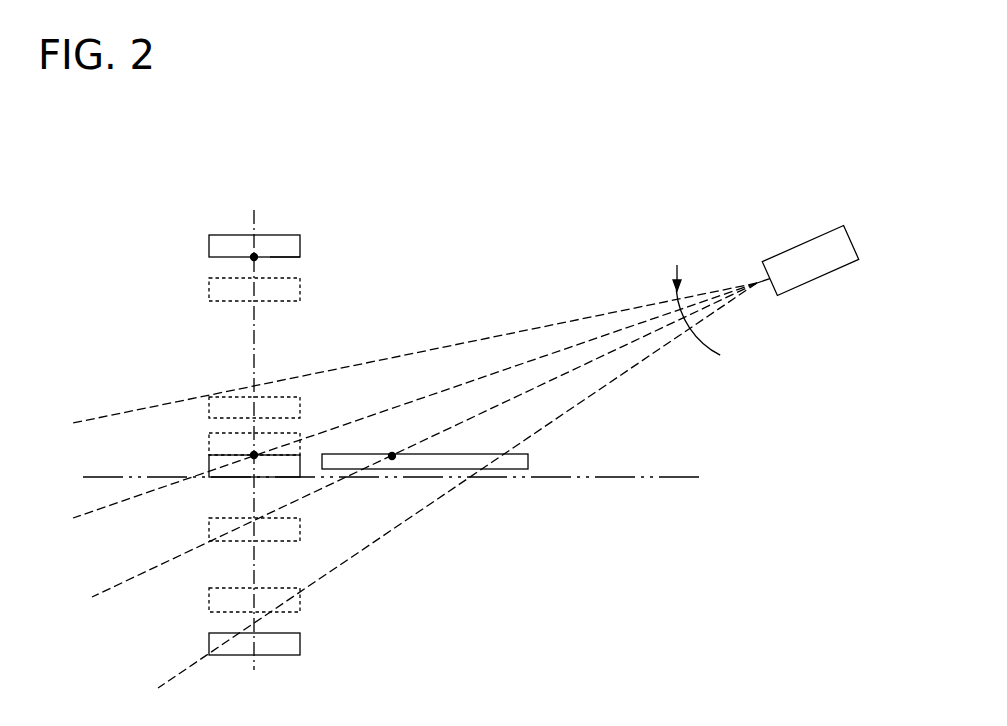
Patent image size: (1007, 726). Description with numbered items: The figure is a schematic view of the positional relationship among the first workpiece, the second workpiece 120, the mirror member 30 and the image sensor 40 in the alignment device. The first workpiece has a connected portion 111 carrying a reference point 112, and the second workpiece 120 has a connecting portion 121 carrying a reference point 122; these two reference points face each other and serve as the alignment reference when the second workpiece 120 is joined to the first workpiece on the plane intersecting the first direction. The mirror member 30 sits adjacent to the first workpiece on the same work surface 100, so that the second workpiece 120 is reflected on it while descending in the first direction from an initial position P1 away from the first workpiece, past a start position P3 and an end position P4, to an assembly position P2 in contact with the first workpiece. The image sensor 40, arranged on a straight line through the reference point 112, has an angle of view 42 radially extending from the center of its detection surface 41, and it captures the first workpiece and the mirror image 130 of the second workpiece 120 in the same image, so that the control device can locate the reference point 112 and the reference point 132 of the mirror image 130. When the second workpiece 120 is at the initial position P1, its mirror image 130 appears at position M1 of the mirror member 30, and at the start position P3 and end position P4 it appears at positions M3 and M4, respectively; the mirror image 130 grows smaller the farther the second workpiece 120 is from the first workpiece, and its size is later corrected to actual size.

The mirror member 30 is at (455, 446).
The image sensor 40 is at (802, 273).
The detection surface 41 is at (762, 281).
The angle of view 42 is at (700, 337).
The work surface 100 is at (209, 466).
The connected portion 111 is at (250, 456).
The reference point 112 is at (253, 459).
The second workpiece 120 is at (254, 347).
The connecting portion 121 is at (288, 258).
The reference point 122 is at (252, 258).
The mirror image 130 is at (260, 612).
The reference point 132 is at (392, 454).
The initial position P1 is at (250, 238).
The assembly position P2 is at (216, 468).
The start position P3 is at (316, 293).
The end position P4 is at (198, 397).
The position of the mirror member M1 is at (312, 648).
The position of the mirror member M3 is at (198, 600).
The position of the mirror member M4 is at (198, 527).